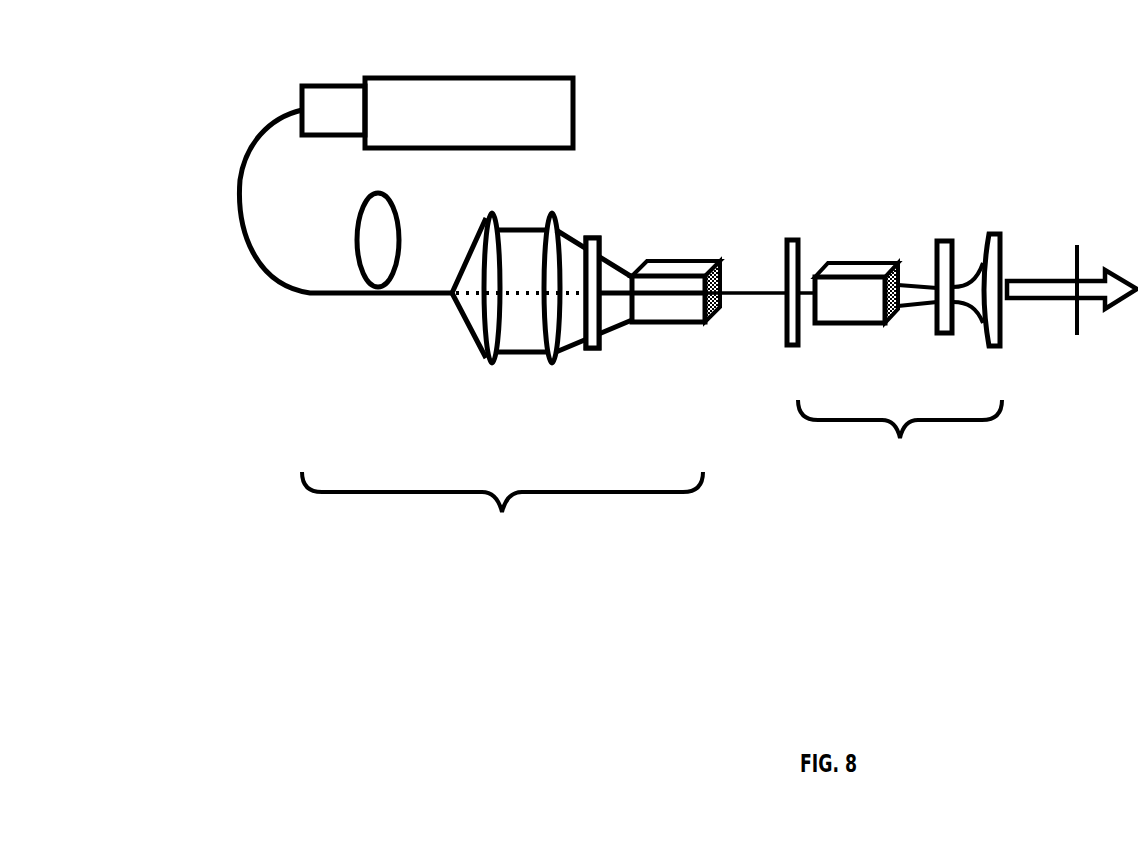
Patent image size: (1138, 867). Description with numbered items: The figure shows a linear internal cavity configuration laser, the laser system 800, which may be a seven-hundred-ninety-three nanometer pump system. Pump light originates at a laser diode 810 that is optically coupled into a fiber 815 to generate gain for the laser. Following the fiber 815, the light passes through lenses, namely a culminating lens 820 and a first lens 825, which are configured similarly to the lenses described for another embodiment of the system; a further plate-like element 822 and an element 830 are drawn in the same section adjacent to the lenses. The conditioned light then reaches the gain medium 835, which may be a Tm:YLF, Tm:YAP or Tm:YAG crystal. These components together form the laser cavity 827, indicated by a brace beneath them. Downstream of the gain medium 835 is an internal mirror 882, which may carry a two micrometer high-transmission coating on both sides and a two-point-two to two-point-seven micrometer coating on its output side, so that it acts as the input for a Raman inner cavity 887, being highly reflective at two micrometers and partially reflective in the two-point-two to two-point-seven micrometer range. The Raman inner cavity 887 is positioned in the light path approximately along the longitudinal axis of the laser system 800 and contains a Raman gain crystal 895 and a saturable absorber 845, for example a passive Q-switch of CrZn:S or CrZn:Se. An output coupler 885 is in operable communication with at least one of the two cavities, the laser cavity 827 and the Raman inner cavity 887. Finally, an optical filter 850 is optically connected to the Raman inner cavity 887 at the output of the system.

The laser system 800 is at (262, 66).
The laser diode 810 is at (574, 84).
The fiber 815 is at (276, 283).
The culminating lens 820 is at (492, 365).
The first lens 825 is at (558, 368).
The optical plate 822 is at (598, 342).
The polarizer 830 is at (627, 220).
The gain medium 835 is at (645, 252).
The laser cavity 827 is at (512, 565).
The internal mirror 882 is at (802, 348).
The Raman gain crystal 895 is at (877, 325).
The saturable absorber 845 is at (933, 227).
The output coupler 885 is at (975, 330).
The Raman inner cavity 887 is at (905, 440).
The optical filter 850 is at (1084, 337).